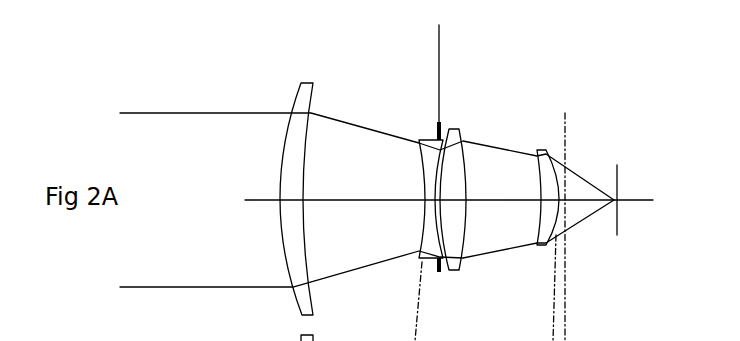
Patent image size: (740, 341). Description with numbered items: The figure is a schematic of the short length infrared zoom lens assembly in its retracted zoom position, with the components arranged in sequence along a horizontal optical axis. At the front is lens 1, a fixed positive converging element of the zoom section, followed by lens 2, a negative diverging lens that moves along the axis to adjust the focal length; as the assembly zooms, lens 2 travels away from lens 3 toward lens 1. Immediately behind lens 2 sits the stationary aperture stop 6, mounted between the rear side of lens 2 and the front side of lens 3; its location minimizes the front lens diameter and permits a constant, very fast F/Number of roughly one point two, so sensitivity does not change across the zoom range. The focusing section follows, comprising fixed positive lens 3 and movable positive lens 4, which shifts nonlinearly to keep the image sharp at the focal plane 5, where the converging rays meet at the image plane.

The lens 1 is at (312, 83).
The lens 2 is at (419, 141).
The lens 3 is at (462, 133).
The lens 4 is at (534, 147).
The focal plane 5 is at (621, 172).
The aperture stop 6 is at (437, 138).